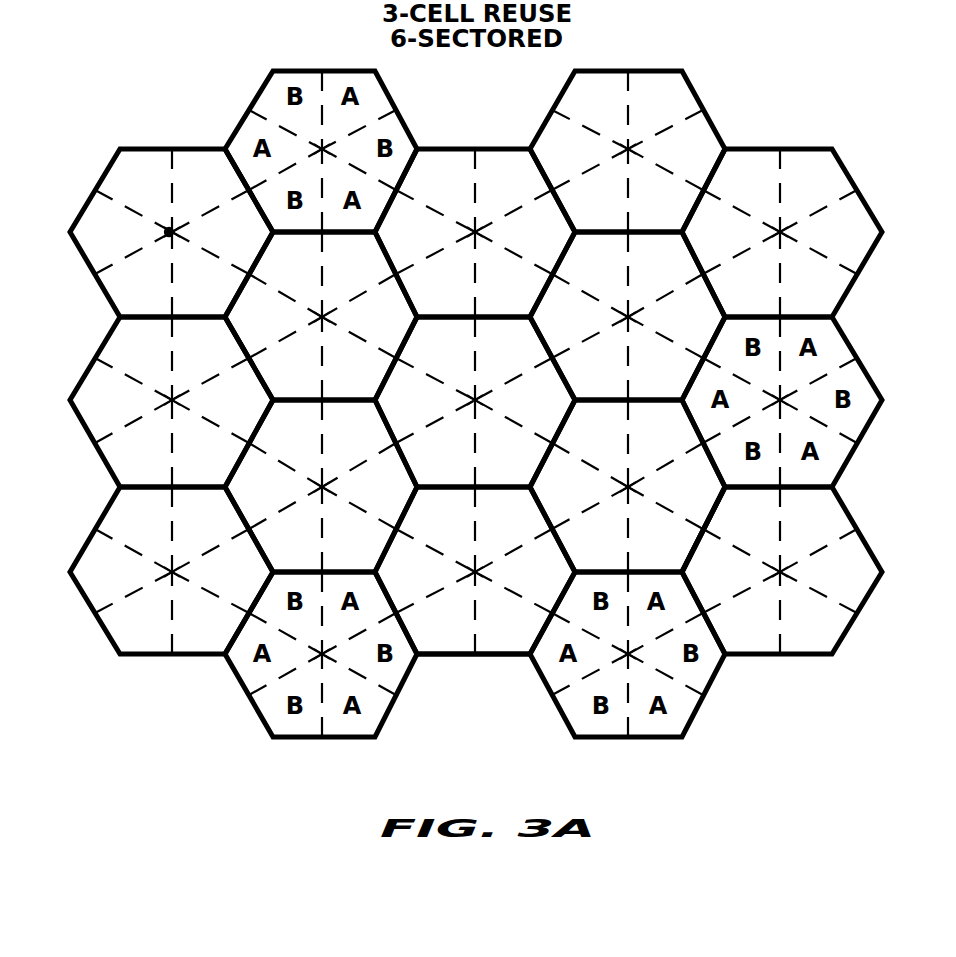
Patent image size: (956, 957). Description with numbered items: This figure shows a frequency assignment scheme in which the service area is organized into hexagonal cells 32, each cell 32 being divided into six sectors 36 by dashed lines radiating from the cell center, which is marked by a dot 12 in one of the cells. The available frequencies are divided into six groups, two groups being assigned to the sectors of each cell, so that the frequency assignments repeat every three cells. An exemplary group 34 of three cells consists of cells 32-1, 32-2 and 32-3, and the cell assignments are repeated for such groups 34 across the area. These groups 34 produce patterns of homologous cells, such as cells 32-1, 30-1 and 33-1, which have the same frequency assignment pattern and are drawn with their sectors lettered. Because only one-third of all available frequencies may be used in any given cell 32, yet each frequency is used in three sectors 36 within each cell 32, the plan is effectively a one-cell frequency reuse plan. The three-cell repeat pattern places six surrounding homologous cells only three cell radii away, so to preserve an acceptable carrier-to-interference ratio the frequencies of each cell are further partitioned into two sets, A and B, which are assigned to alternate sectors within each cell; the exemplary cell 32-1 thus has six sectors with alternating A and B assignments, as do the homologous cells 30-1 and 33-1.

The base station 12 is at (166, 238).
The homologous cell 30-1 is at (686, 99).
The hexagonal cell 32 is at (337, 332).
The cell 32-1 is at (553, 386).
The cell 32-2 is at (500, 541).
The cell 32-3 is at (657, 449).
The homologous cell 33-1 is at (92, 412).
The group of three cells 34 is at (487, 666).
The sector 36 is at (462, 291).